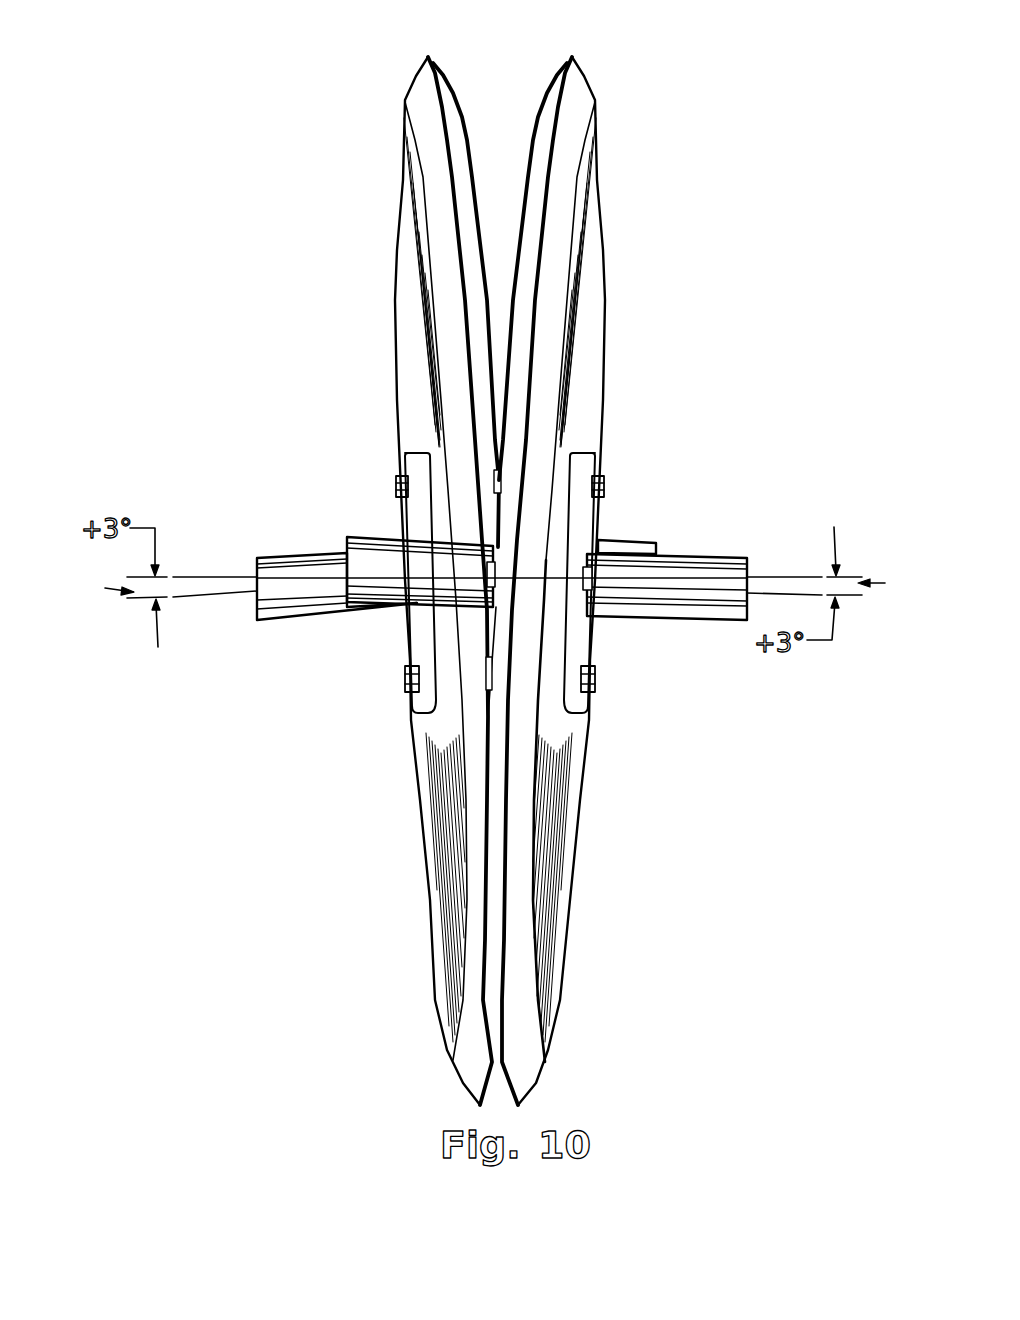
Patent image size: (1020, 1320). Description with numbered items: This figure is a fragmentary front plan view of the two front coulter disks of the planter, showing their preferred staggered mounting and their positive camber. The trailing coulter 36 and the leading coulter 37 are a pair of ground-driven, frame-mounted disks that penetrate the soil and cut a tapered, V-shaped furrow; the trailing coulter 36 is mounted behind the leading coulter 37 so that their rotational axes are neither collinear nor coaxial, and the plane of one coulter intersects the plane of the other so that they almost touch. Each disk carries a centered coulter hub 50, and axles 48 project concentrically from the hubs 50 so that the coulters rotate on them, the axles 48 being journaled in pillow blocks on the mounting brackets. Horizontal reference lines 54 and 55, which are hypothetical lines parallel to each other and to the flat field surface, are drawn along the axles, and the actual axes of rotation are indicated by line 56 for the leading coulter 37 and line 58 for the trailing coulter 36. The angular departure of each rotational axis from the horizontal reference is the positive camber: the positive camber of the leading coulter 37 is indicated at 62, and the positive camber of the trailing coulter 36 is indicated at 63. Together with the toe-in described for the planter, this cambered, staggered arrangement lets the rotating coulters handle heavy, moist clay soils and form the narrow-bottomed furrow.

The trailing coulter 36 is at (400, 277).
The leading coulter 37 is at (592, 405).
The axles 48 is at (302, 563).
The coulter hubs 50 is at (593, 648).
The horizontal reference line 54 is at (218, 588).
The horizontal reference line 55 is at (775, 573).
The axis of rotation of leading coulter 56 is at (776, 597).
The axis of rotation of trailing coulter 58 is at (215, 575).
The positive camber of leading coulter 62 is at (885, 583).
The positive camber of trailing coulter 63 is at (105, 588).